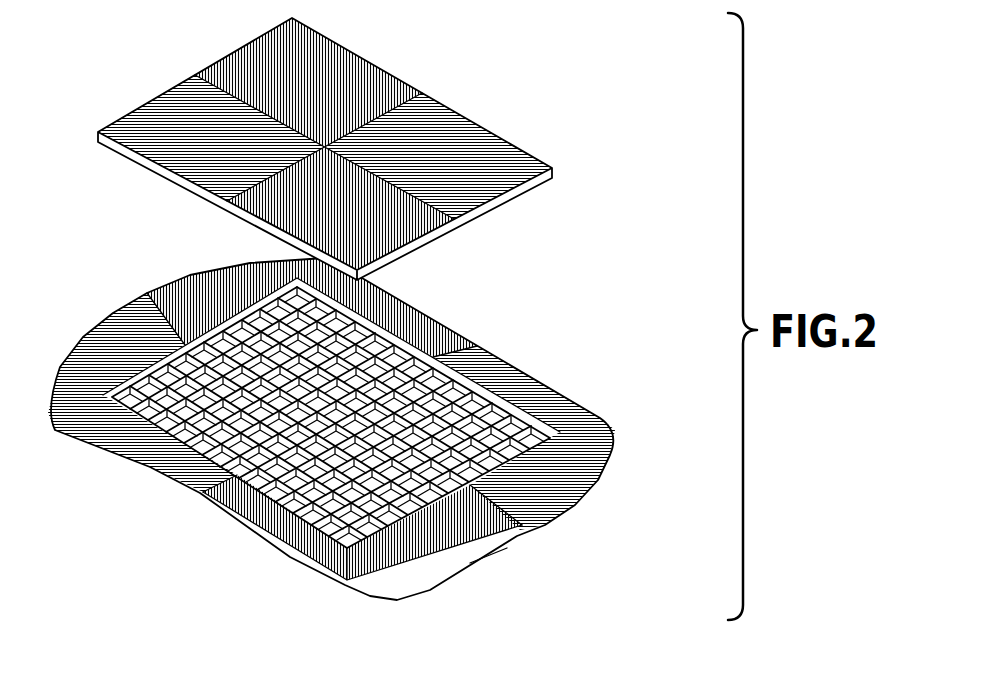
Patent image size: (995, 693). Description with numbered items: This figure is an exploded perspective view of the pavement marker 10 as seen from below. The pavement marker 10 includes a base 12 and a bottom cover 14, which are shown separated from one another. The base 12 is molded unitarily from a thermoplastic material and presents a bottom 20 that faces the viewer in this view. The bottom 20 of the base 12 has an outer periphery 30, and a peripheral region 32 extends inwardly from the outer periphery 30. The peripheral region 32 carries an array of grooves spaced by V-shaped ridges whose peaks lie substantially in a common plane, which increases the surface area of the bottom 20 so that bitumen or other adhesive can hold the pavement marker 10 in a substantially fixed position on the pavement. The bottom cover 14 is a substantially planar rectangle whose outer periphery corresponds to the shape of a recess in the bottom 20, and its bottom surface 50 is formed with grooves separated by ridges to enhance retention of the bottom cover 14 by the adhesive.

The pavement marker 10 is at (645, 323).
The base 12 is at (623, 415).
The bottom cover 14 is at (556, 165).
The bottom 20 is at (118, 328).
The outer periphery 30 is at (167, 428).
The peripheral region 32 is at (222, 480).
The bottom surface 50 is at (433, 125).